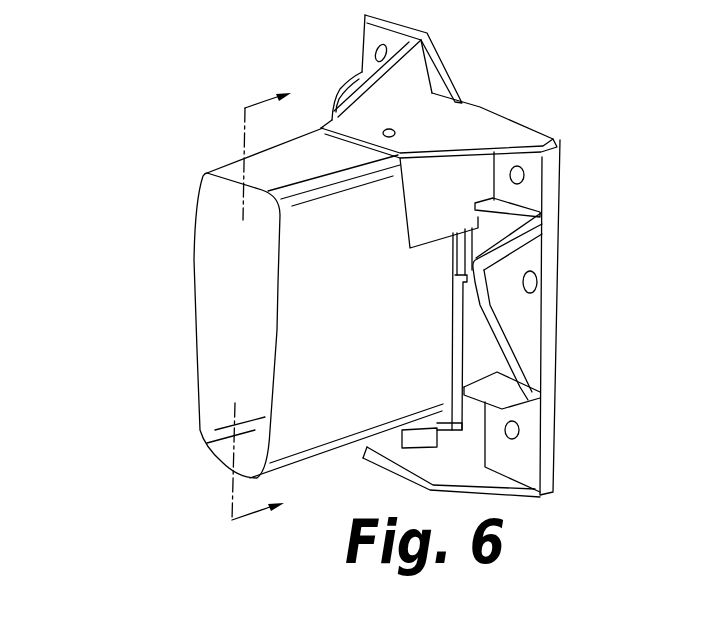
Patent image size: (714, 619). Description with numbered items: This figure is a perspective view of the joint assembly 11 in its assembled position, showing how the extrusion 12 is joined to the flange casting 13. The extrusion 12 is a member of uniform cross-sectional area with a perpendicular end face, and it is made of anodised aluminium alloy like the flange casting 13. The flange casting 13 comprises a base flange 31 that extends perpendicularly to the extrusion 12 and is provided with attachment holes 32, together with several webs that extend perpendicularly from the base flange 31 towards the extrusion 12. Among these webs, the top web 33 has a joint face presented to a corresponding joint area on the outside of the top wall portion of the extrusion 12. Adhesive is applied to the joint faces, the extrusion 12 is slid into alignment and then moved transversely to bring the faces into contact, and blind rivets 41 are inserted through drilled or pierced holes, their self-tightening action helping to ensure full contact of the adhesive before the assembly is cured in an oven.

The joint assembly 11 is at (140, 409).
The extrusion 12 is at (203, 441).
The flange casting 13 is at (553, 493).
The base flange 31 is at (557, 210).
The attachment holes 32 is at (525, 178).
The top web 33 is at (447, 128).
The blind rivets 41 is at (395, 130).